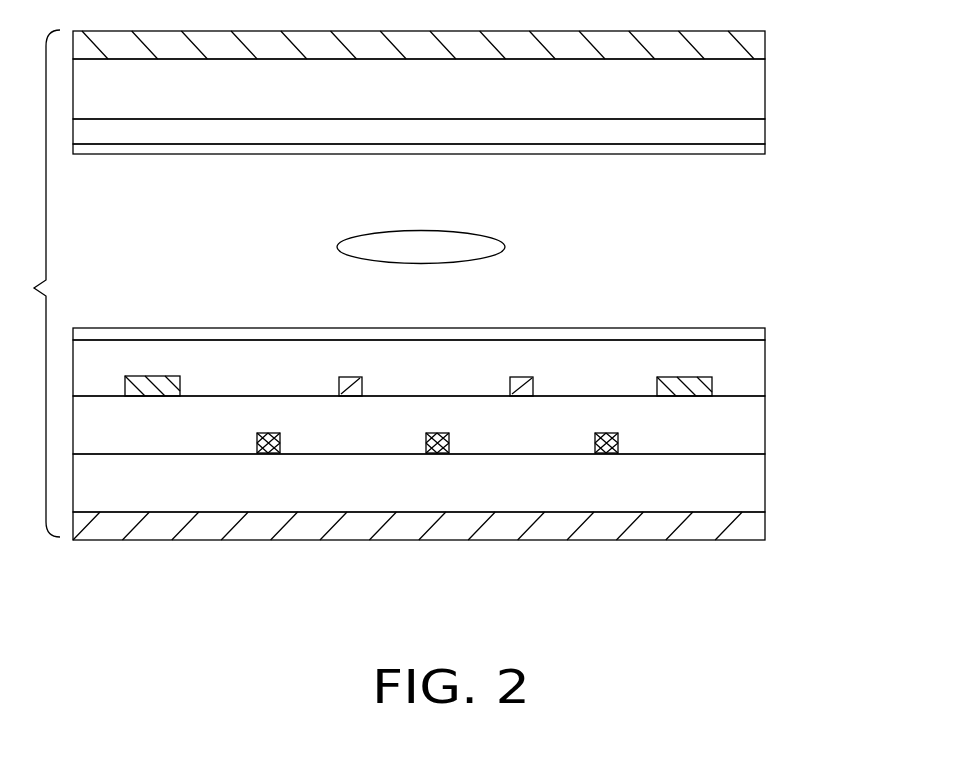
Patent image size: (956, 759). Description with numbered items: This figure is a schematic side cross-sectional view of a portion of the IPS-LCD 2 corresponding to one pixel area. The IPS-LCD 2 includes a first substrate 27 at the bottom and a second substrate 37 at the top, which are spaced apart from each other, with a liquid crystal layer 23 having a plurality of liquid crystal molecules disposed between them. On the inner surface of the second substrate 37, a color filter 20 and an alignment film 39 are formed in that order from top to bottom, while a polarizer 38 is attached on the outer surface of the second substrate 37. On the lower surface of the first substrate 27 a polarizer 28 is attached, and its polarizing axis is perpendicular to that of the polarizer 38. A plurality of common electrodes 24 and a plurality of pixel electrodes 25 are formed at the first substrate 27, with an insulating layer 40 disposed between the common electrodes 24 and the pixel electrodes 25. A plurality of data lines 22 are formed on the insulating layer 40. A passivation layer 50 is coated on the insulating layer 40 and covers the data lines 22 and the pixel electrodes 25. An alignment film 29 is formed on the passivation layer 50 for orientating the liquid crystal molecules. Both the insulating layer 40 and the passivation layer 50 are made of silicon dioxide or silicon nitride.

The IPS-LCD 2 is at (36, 283).
The color filter 20 is at (743, 134).
The data lines 22 is at (150, 385).
The liquid crystal layer 23 is at (468, 248).
The common electrodes 24 is at (435, 450).
The pixel electrodes 25 is at (522, 387).
The first substrate 27 is at (752, 477).
The polarizer 28 is at (748, 528).
The alignment film 29 is at (752, 337).
The second substrate 37 is at (743, 90).
The polarizer 38 is at (743, 48).
The alignment film 39 is at (753, 151).
The insulating layer 40 is at (748, 425).
The passivation layer 50 is at (752, 369).